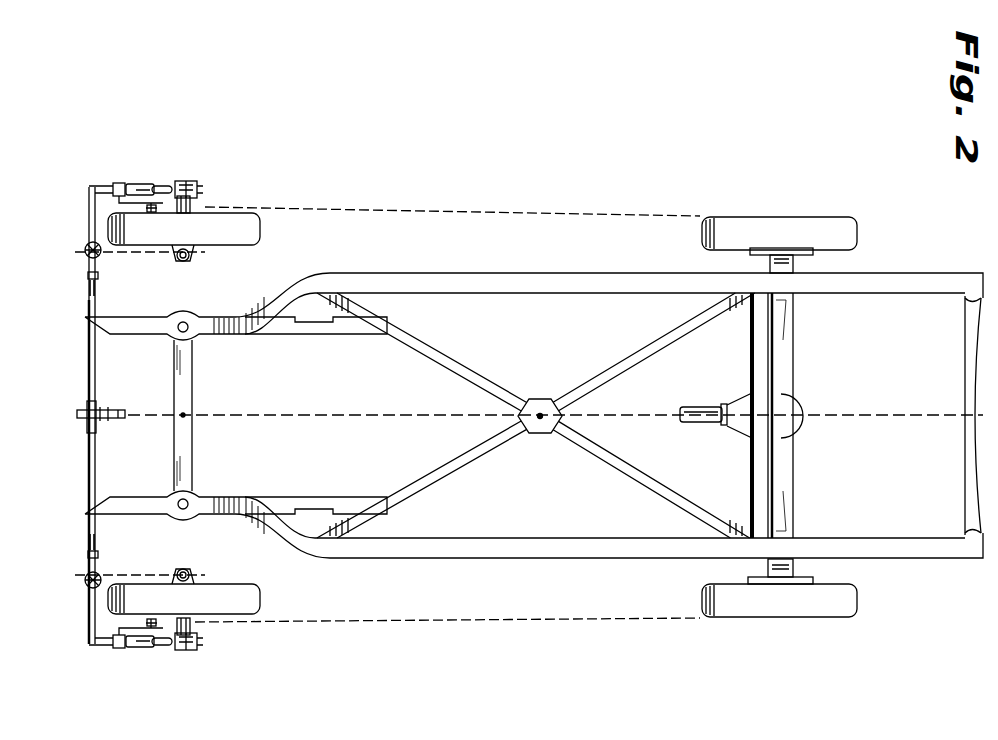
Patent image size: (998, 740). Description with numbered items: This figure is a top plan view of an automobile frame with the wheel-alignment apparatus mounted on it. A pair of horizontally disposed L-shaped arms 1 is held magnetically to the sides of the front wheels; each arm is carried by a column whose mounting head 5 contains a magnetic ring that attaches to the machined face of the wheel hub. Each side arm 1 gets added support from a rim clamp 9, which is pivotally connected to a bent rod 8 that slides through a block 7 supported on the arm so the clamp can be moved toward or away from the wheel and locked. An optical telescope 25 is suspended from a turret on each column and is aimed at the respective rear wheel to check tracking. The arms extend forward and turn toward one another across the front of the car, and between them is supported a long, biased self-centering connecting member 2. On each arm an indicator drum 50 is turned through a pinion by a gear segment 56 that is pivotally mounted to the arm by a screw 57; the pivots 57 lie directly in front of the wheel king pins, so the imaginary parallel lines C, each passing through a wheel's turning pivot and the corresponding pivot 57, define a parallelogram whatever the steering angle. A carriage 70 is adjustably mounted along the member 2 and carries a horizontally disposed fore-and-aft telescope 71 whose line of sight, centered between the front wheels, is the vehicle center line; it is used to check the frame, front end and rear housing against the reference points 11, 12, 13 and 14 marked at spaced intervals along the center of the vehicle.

The L-shaped arm 1 is at (89, 638).
The connecting member 2 is at (89, 470).
The mounting head 5 is at (190, 630).
The slidable block 7 is at (118, 648).
The bent rod 8 is at (128, 628).
The rim clamp 9 is at (152, 627).
The front cross bar 11 is at (183, 415).
The central hub of X-brace 12 is at (540, 416).
The differential housing 13 is at (782, 416).
The rear spring member 14 is at (971, 420).
The optical telescope 25 is at (198, 640).
The indicator drum 50 is at (86, 582).
The gear segment 56 is at (99, 554).
The screw pivot 57 is at (89, 545).
The carriage 70 is at (87, 425).
The fore-and-aft telescope 71 is at (78, 410).
The imaginary parallel line C is at (180, 568).